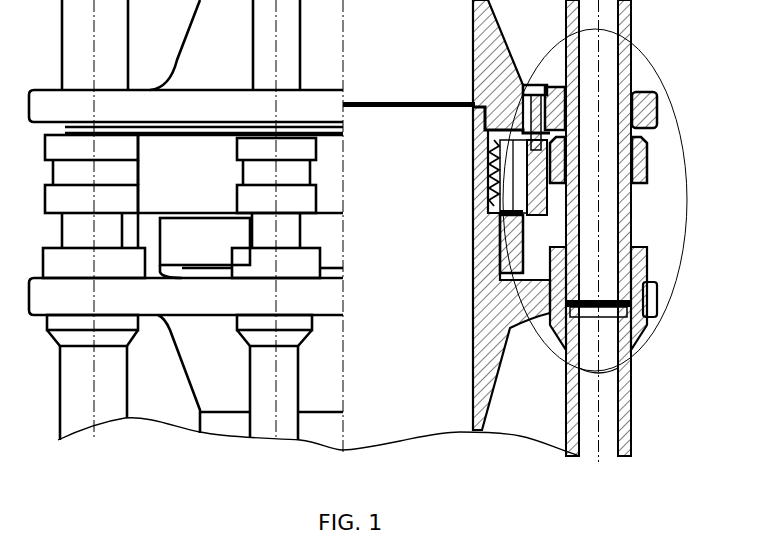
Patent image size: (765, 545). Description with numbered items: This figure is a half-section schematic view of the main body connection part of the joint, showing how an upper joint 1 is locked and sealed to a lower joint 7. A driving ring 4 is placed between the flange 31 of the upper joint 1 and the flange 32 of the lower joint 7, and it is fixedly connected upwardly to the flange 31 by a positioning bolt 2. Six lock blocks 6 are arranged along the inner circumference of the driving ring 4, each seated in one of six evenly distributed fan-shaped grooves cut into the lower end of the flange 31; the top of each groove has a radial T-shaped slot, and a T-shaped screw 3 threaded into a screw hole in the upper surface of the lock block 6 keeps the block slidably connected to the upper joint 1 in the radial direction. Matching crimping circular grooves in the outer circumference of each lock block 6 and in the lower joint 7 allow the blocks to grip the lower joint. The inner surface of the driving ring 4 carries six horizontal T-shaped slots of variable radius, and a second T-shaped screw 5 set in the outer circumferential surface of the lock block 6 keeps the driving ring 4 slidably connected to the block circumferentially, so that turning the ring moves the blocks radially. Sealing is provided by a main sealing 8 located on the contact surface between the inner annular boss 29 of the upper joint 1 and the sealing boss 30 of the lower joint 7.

The upper joint 1 is at (473, 27).
The positioning bolt 2 is at (537, 85).
The T-shaped screw 3 is at (492, 142).
The driving ring 4 is at (495, 165).
The T-shaped screw 5 is at (490, 188).
The lock block 6 is at (495, 210).
The lower joint 7 is at (495, 222).
The main sealing 8 is at (472, 101).
The inner annular boss 29 is at (548, 101).
The sealing boss 30 is at (484, 112).
The flange 31 is at (657, 108).
The flange 32 is at (655, 313).